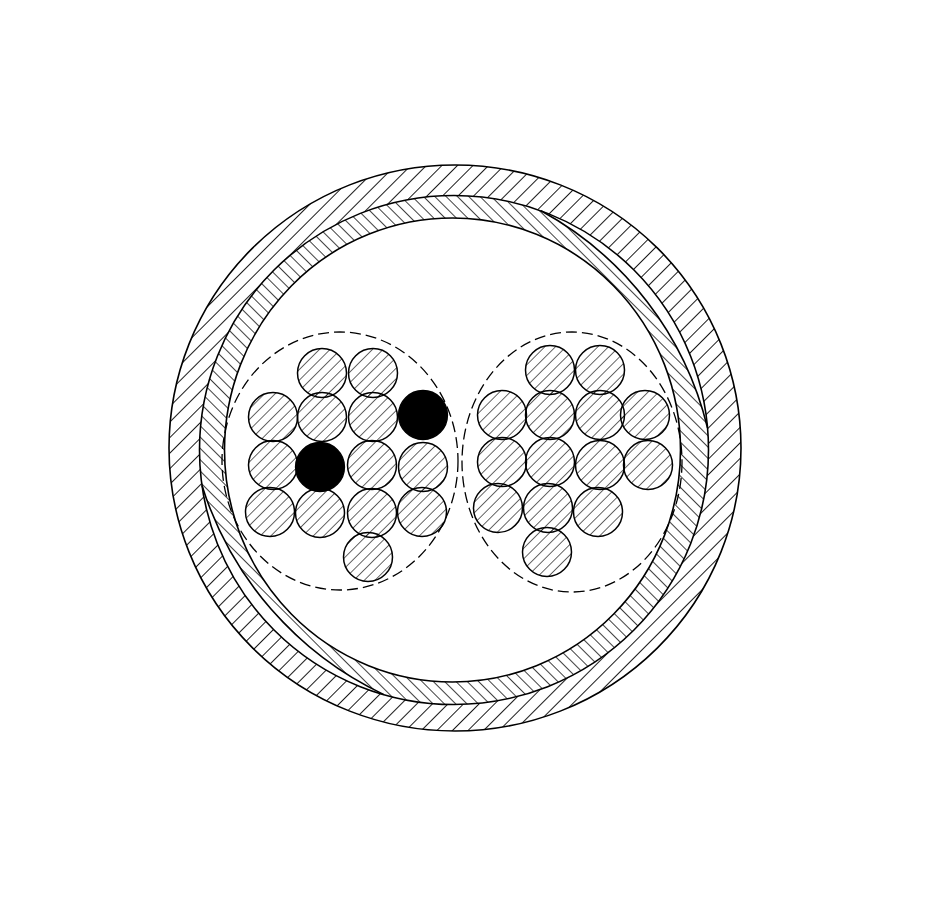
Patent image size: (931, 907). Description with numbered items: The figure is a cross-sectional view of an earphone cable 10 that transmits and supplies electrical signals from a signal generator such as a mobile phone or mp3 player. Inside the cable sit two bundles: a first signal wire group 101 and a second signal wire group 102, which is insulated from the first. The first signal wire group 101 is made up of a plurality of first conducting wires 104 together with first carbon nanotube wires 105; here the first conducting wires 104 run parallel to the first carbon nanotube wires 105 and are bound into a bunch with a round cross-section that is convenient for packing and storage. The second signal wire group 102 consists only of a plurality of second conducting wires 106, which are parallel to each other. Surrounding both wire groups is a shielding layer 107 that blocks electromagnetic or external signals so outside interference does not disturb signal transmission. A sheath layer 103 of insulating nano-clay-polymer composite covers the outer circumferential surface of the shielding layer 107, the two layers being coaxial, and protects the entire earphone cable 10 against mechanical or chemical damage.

The earphone cable 10 is at (493, 55).
The first signal wire group 101 is at (95, 350).
The second signal wire group 102 is at (572, 332).
The sheath layer 103 is at (528, 176).
The first conducting wires 104 is at (290, 478).
The first carbon nanotube wire 105 is at (318, 475).
The second conducting wires 106 is at (600, 516).
The shielding layer 107 is at (592, 648).